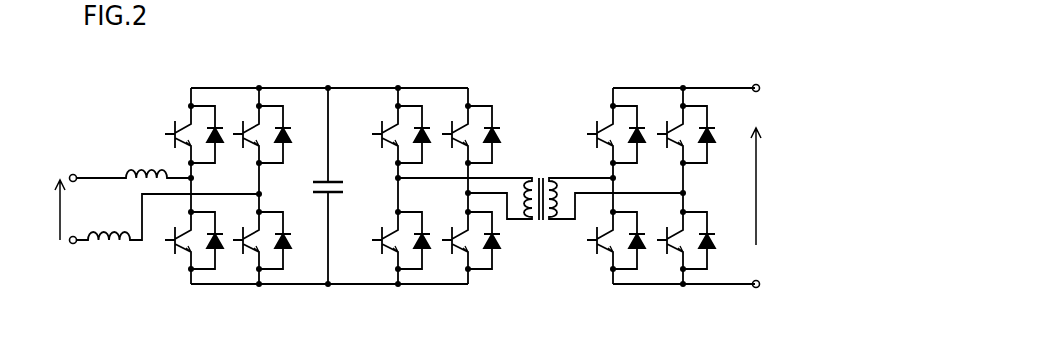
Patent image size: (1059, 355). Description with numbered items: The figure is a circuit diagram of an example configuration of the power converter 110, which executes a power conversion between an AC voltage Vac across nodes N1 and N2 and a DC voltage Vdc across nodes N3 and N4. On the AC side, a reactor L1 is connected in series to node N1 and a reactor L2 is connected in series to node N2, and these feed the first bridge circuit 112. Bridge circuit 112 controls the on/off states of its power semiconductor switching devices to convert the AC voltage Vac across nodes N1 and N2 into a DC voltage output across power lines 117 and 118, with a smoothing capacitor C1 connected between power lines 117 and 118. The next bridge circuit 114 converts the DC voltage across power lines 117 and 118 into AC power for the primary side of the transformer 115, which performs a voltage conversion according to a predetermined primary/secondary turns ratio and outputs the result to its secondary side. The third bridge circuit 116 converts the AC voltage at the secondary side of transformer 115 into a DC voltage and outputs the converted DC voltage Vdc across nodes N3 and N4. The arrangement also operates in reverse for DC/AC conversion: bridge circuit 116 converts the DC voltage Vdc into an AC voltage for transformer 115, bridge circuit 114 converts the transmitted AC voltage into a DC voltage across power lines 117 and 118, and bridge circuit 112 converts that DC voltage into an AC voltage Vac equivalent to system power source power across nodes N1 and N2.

The power converter 110 is at (664, 38).
The bridge circuit 112 is at (262, 293).
The bridge circuit 114 is at (472, 293).
The transformer 115 is at (541, 233).
The bridge circuit 116 is at (685, 293).
The power line 117 is at (362, 87).
The power line 118 is at (353, 287).
The smoothing capacitor C1 is at (337, 180).
The reactor L1 is at (131, 166).
The reactor L2 is at (126, 243).
The node N1 is at (75, 166).
The node N2 is at (73, 248).
The node N3 is at (755, 82).
The node N4 is at (756, 290).
The AC voltage Vac is at (43, 210).
The DC voltage Vdc is at (756, 199).